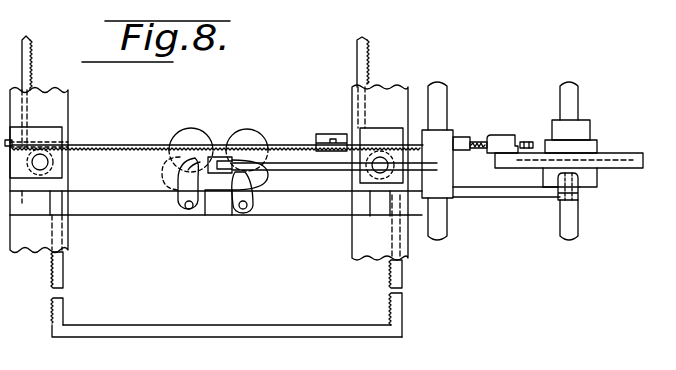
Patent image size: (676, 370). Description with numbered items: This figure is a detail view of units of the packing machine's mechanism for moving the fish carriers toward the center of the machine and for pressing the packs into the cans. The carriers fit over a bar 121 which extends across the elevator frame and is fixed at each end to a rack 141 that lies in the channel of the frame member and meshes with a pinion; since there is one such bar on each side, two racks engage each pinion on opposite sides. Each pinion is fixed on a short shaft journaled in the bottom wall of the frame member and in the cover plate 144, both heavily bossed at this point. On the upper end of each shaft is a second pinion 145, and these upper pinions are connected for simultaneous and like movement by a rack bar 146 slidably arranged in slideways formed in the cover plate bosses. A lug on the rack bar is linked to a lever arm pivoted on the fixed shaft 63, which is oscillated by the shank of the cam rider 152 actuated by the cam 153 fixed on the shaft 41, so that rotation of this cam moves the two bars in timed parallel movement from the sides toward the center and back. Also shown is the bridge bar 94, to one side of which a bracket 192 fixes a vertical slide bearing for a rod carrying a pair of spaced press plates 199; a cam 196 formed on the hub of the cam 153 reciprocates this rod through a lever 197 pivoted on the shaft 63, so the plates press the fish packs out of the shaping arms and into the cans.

The rack 141 is at (29, 73).
The cover plate 144 is at (68, 102).
The second pinion 145 is at (50, 163).
The rack bar 146 is at (140, 127).
The press plates 199 is at (249, 129).
The bracket 192 is at (187, 179).
The lever 197 is at (333, 177).
The bridge bar 94 is at (133, 212).
The fixed shaft 63 is at (450, 223).
The cam rider 152 is at (505, 140).
The shaft 41 is at (575, 100).
The cam 153 is at (632, 149).
The cam 196 is at (585, 182).
The bar 121 is at (181, 311).